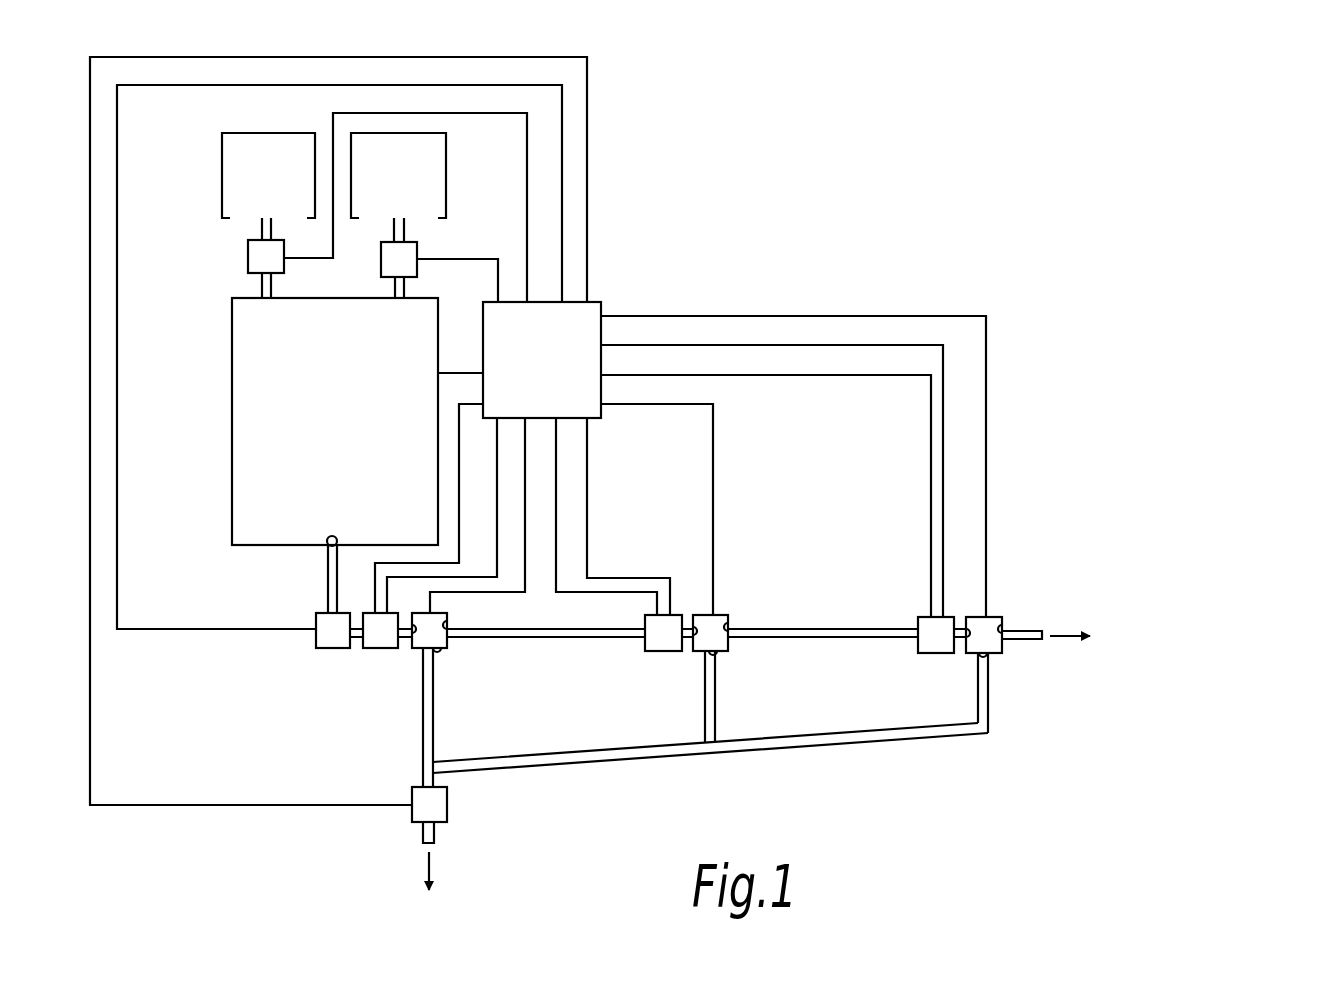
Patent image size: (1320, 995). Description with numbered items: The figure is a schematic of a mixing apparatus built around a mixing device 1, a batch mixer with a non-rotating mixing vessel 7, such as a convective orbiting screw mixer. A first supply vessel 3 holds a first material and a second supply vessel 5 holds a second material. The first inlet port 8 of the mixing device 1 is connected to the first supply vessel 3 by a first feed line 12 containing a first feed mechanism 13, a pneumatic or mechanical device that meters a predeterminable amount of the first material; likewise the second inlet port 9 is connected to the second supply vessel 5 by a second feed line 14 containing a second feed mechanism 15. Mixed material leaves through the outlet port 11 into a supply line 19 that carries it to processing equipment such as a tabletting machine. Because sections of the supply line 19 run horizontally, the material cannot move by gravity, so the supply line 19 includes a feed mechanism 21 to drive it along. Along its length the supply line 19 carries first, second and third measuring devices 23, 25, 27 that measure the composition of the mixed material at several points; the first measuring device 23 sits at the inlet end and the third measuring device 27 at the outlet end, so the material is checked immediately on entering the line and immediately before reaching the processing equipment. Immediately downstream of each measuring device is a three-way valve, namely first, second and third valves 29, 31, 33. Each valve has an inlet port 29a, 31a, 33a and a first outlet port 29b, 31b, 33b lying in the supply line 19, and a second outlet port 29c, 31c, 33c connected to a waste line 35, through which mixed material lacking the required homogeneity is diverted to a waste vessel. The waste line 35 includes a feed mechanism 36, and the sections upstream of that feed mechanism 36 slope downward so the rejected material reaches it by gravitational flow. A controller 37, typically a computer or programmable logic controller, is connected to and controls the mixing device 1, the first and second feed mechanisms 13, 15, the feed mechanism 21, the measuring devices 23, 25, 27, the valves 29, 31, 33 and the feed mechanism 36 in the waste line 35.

The mixing device 1 is at (222, 361).
The first supply vessel 3 is at (268, 180).
The second supply vessel 5 is at (398, 180).
The mixing vessel 7 is at (335, 421).
The first inlet port 8 is at (264, 300).
The second inlet port 9 is at (398, 300).
The outlet port 11 is at (327, 546).
The first feed line 12 is at (258, 228).
The first feed mechanism 13 is at (256, 257).
The second feed line 14 is at (396, 231).
The second feed mechanism 15 is at (410, 253).
The supply line 19 is at (328, 594).
The feed mechanism 21 is at (333, 641).
The first measuring device 23 is at (374, 645).
The second measuring device 25 is at (654, 647).
The third measuring device 27 is at (926, 628).
The first valve 29 is at (428, 622).
The inlet port 29a is at (410, 634).
The first outlet port 29b is at (449, 624).
The second outlet port 29c is at (440, 651).
The second valve 31 is at (704, 622).
The inlet port 31a is at (690, 636).
The first outlet port 31b is at (730, 626).
The second outlet port 31c is at (718, 653).
The third valve 33 is at (977, 628).
The inlet port 33a is at (962, 640).
The first outlet port 33b is at (1028, 612).
The second outlet port 33c is at (995, 655).
The waste line 35 is at (790, 757).
The feed mechanism 36 is at (440, 814).
The controller 37 is at (538, 431).